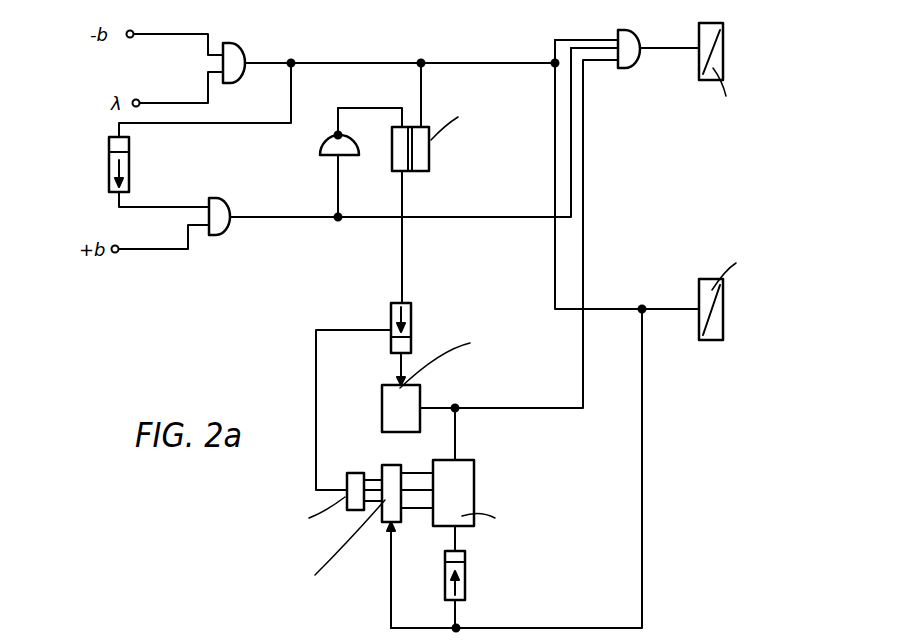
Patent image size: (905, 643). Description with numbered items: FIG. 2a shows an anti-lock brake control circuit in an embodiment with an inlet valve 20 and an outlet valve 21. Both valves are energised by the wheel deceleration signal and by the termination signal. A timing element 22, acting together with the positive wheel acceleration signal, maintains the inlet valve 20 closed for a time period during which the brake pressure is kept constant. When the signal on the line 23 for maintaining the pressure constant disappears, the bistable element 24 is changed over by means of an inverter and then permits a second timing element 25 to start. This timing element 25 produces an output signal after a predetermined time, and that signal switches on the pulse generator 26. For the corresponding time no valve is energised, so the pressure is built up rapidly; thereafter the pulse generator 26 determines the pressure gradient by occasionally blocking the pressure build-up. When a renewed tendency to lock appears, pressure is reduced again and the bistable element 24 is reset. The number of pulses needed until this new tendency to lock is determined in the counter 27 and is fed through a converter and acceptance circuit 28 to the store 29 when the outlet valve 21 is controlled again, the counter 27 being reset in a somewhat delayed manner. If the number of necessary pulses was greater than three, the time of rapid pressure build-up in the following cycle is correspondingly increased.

The inlet valve 20 is at (724, 45).
The outlet valve 21 is at (724, 327).
The timing element 22 is at (108, 158).
The line 23 is at (283, 219).
The bistable element 24 is at (431, 155).
The timing element 25 is at (412, 330).
The pulse generator 26 is at (410, 398).
The counter 27 is at (475, 489).
The acceptance circuit 28 is at (388, 507).
The store 29 is at (357, 510).